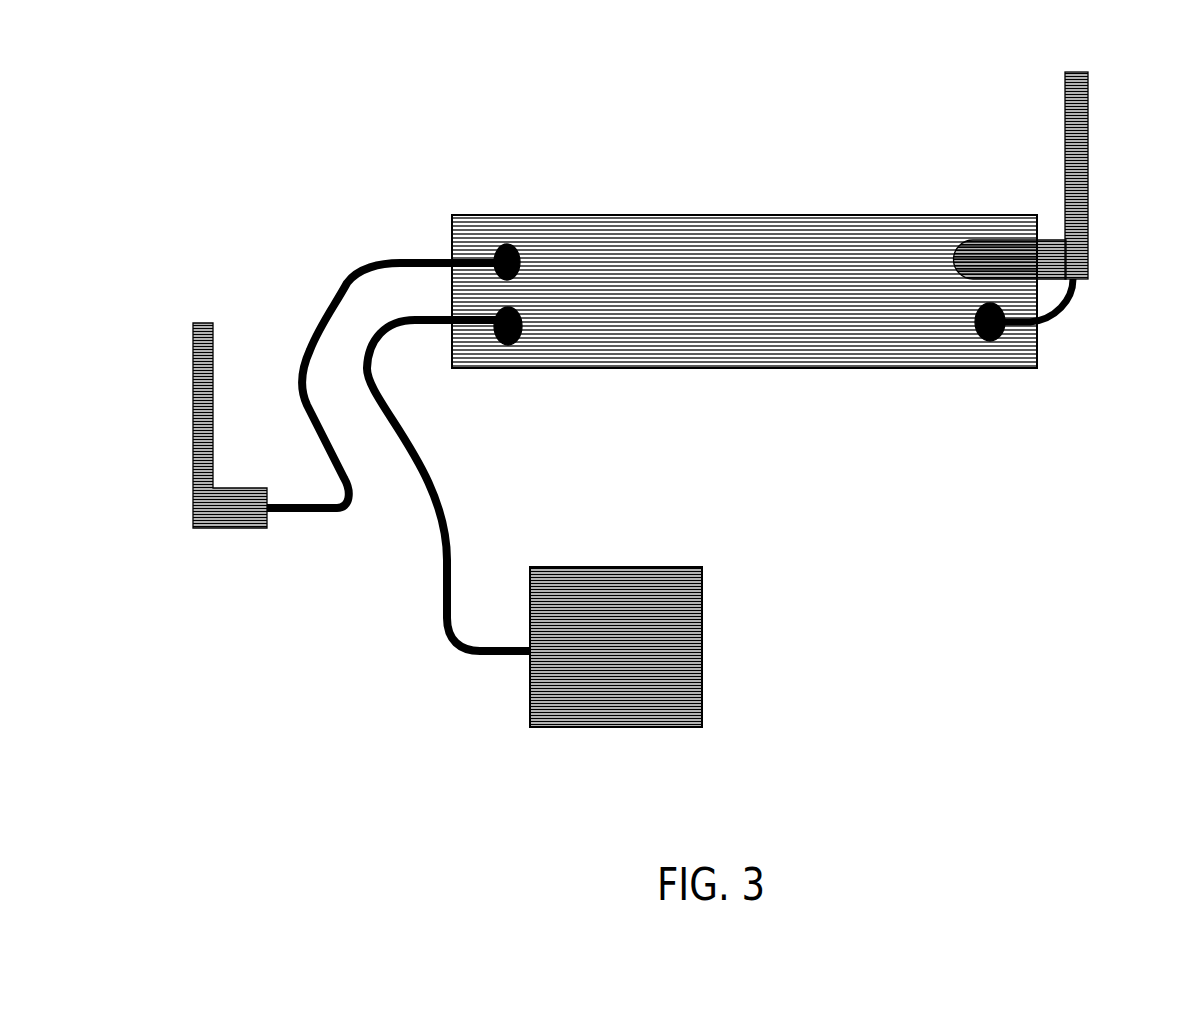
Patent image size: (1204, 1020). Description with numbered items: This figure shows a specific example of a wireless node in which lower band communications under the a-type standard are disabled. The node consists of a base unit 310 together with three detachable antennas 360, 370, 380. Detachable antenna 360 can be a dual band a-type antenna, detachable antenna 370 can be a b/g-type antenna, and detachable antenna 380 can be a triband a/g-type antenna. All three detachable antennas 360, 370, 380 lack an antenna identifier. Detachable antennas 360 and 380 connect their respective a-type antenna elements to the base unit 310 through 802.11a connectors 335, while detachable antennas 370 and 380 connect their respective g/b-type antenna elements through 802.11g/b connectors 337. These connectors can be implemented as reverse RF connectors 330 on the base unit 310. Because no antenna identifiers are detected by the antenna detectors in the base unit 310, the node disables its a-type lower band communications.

The base unit 310 is at (744, 291).
The reverse RF connectors 330 is at (528, 280).
The 802.11a connectors 335 is at (528, 247).
The 802.11g/b connectors 337 is at (489, 345).
The detachable antenna 360 is at (215, 340).
The detachable antenna 370 is at (559, 523).
The detachable antenna 380 is at (1086, 68).